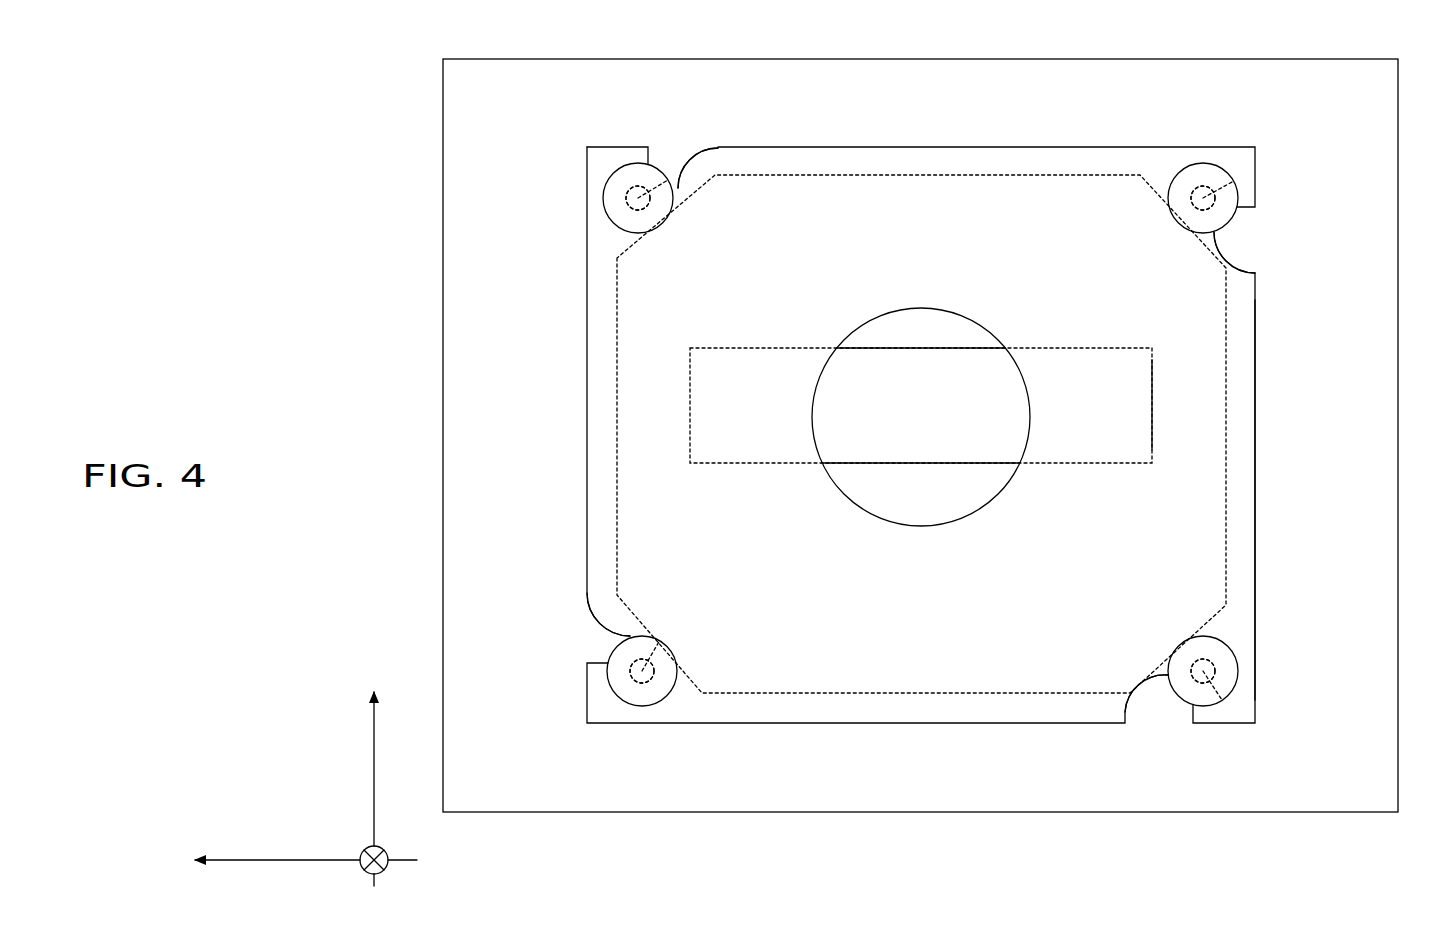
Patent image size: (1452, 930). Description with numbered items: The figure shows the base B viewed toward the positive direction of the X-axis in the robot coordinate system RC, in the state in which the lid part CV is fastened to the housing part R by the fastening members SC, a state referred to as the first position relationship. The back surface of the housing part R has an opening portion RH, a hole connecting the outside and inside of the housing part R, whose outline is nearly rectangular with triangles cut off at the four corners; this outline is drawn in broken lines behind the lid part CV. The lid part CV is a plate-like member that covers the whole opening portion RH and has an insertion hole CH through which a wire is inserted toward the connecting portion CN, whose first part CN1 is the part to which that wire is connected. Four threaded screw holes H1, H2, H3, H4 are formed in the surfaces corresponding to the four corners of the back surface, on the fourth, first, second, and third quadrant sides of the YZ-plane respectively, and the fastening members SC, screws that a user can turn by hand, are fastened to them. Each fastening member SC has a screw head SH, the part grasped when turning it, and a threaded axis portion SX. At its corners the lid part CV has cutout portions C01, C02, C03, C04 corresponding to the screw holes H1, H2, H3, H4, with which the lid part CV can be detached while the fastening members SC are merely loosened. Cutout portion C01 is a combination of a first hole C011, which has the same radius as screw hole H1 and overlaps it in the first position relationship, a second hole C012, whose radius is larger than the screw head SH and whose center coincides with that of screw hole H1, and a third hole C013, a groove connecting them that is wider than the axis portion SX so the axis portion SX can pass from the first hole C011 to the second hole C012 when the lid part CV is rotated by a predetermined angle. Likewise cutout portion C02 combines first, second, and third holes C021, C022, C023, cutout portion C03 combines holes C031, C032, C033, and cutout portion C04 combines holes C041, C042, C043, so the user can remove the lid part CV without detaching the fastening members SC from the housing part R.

The base B is at (1398, 148).
The housing part R is at (1227, 308).
The lid part CV is at (1255, 468).
The opening portion RH is at (655, 410).
The insertion hole CH is at (930, 308).
The connecting portion CN is at (1150, 403).
The first part CN1 is at (1117, 378).
The screw head SH is at (605, 192).
The fastening member SC is at (613, 227).
The axis portion SX is at (929, 440).
The screw hole H1 is at (1227, 192).
The screw hole H2 is at (660, 202).
The screw hole H3 is at (633, 640).
The screw hole H4 is at (1208, 707).
The cutout portion C01 is at (1240, 240).
The first hole C011 is at (1177, 207).
The second hole C012 is at (1240, 219).
The third hole C013 is at (1197, 223).
The cutout portion C02 is at (683, 150).
The first hole C021 is at (620, 186).
The second hole C022 is at (697, 150).
The third hole C023 is at (655, 210).
The cutout portion C03 is at (592, 610).
The first hole C031 is at (635, 693).
The second hole C032 is at (590, 648).
The third hole C033 is at (613, 672).
The cutout portion C04 is at (1153, 713).
The first hole C041 is at (1215, 658).
The second hole C042 is at (1152, 698).
The third hole C043 is at (1173, 670).
The robot coordinate system RC is at (360, 845).